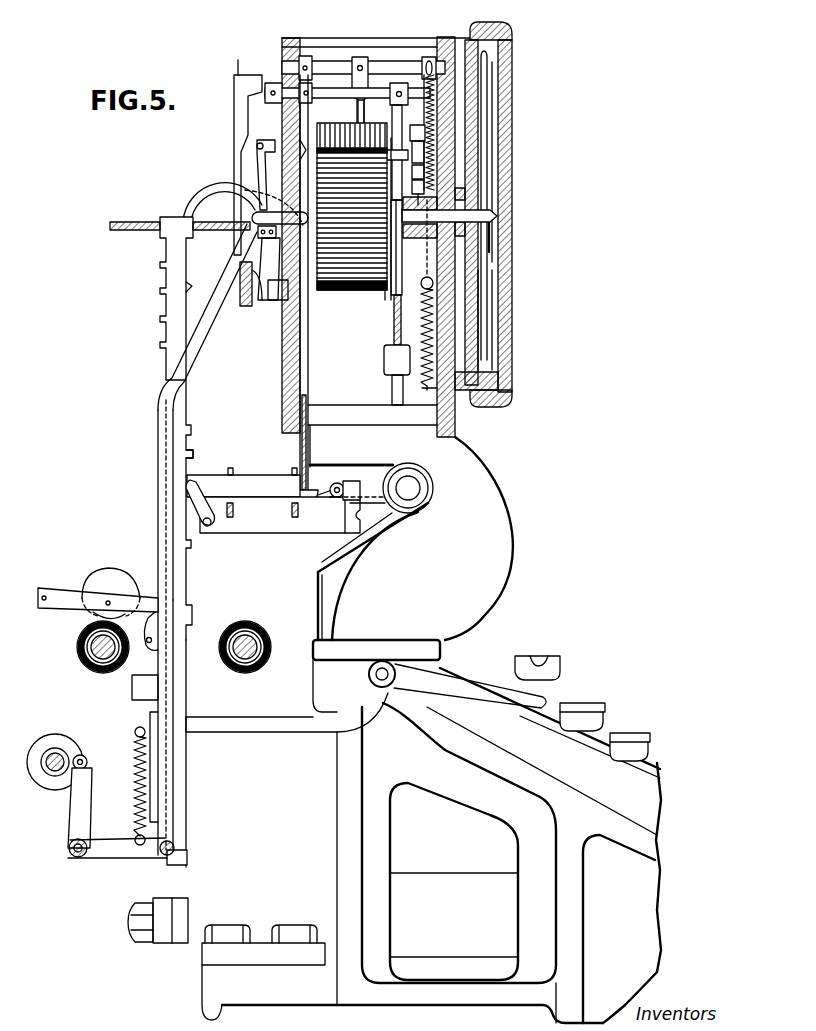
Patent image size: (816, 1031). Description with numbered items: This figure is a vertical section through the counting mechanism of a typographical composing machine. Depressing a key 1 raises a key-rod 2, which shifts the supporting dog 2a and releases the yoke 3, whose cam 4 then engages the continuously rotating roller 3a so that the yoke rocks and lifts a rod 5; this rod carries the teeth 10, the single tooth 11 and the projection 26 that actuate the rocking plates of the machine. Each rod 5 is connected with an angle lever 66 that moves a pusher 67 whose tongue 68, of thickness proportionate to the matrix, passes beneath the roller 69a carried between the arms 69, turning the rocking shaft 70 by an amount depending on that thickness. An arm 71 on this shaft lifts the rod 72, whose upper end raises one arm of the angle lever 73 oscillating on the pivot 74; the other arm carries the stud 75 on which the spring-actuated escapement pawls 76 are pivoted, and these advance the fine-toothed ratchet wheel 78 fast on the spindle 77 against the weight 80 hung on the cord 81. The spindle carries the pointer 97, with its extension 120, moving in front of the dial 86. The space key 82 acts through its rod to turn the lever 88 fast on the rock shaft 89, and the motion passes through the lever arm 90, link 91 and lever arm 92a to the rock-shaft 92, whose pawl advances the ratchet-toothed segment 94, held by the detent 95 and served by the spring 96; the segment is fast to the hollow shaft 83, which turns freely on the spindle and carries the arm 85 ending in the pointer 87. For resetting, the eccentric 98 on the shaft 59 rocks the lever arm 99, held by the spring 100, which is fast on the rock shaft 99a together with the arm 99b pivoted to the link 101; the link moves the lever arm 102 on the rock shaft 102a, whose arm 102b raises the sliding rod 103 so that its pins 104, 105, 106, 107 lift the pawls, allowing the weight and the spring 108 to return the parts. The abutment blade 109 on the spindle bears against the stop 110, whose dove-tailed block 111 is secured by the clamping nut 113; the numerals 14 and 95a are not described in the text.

The key 1 is at (580, 702).
The key-rod 2 is at (186, 805).
The supporting dog 2a is at (150, 632).
The cam carriage or yoke 3 is at (62, 594).
The continuously rotating roller 3a is at (103, 673).
The cam 4 is at (106, 568).
The rod 5 is at (184, 416).
The teeth 10 is at (152, 378).
The tooth 11 is at (192, 290).
The bracket 14 is at (470, 105).
The projection or tooth 26 is at (190, 455).
The shaft 59 is at (55, 748).
The angle lever 66 is at (212, 518).
The pusher 67 is at (250, 478).
The tongue 68 is at (312, 502).
The arms 69 is at (352, 481).
The roller 69a is at (336, 482).
The rocking shaft 70 is at (410, 488).
The arm 71 is at (378, 510).
The rod 72 is at (308, 444).
The angle lever 73 is at (358, 168).
The pivot 74 is at (360, 186).
The stud 75 is at (294, 125).
The escapement pawls 76 is at (300, 140).
The spindle 77 is at (410, 237).
The ratchet wheel 78 is at (352, 292).
The weight 80 is at (384, 360).
The cord 81 is at (394, 320).
The space key 82 is at (530, 658).
The hollow shaft 83 is at (434, 237).
The arm 85 is at (478, 150).
The dial 86 is at (480, 276).
The index or pointer 87 is at (490, 72).
The lever 88 is at (208, 197).
The rock shaft 89 is at (252, 222).
The lever arm 90 is at (333, 214).
The link 91 is at (352, 212).
The rock-shaft 92 is at (320, 62).
The lever arm 92a is at (361, 58).
The ratchet-toothed segment 94 is at (433, 185).
The detent 95 is at (439, 132).
The block 95a is at (434, 143).
The spring 96 is at (433, 163).
The index or pointer 97 is at (492, 176).
The eccentric 98 is at (81, 755).
The lever arm 99 is at (84, 800).
The rock shaft 99a is at (78, 858).
The arm 99b is at (120, 858).
The spring 100 is at (134, 762).
The link or rod 101 is at (160, 772).
The lever arm 102 is at (238, 68).
The rock shaft 102a is at (376, 90).
The arm 102b is at (404, 86).
The sliding rod 103 is at (399, 128).
The pin 104 is at (396, 176).
The pin 105 is at (396, 190).
The pin 106 is at (364, 124).
The pin 107 is at (372, 111).
The spring 108 is at (425, 313).
The abutment blade 109 is at (262, 262).
The stop 110 is at (256, 310).
The dove-tailed head or block 111 is at (278, 301).
The clamping nut 113 is at (246, 306).
The extension 120 is at (492, 246).